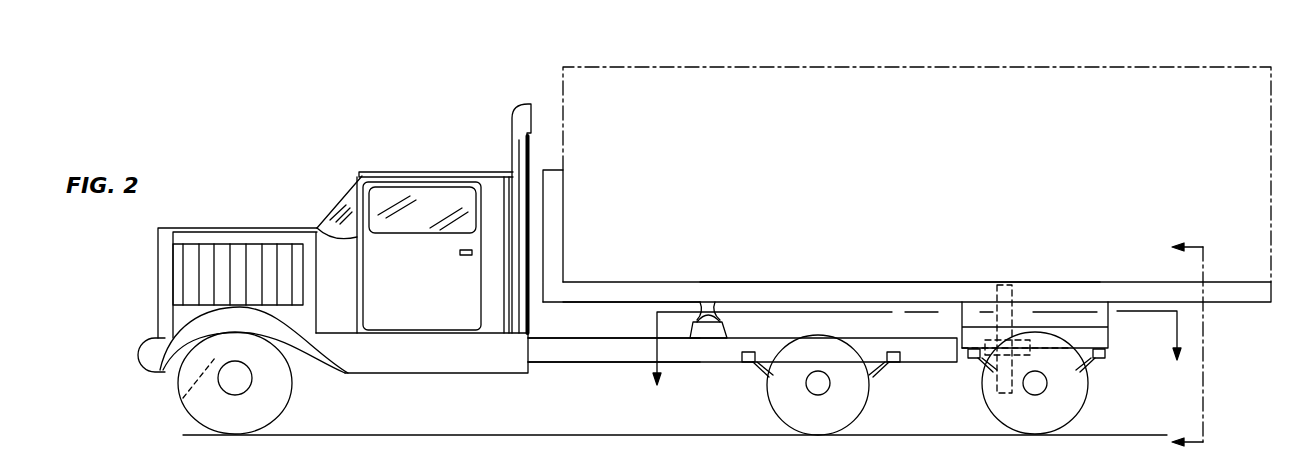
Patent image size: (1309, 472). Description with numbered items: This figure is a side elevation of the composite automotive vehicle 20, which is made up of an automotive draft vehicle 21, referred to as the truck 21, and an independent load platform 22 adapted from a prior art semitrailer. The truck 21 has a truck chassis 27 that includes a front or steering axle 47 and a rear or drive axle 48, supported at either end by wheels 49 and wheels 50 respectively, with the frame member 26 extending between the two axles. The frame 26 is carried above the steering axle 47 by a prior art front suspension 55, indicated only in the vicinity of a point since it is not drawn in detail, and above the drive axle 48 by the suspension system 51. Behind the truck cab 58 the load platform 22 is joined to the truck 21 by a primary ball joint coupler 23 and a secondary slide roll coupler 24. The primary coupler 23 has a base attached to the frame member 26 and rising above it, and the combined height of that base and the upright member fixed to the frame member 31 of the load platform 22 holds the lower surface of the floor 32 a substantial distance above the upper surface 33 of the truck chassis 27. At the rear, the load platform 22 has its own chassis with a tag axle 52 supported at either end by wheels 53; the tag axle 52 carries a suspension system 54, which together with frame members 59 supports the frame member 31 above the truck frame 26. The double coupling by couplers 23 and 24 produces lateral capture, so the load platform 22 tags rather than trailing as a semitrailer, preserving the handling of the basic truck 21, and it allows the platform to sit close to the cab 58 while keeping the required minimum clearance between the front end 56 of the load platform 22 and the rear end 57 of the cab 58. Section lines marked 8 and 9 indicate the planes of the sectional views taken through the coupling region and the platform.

The composite automotive vehicle 20 is at (1279, 94).
The automotive draft vehicle 21 is at (372, 148).
The load platform 22 is at (566, 252).
The primary ball joint coupler 23 is at (714, 318).
The secondary slide roll coupler 24 is at (1005, 330).
The frame member 26 is at (636, 356).
The truck chassis 27 is at (593, 362).
The frame member 31 is at (893, 268).
The floor 32 is at (626, 301).
The upper surface 33 is at (605, 338).
The front or steering axle 47 is at (247, 393).
The rear or drive axle 48 is at (830, 388).
The wheels 49 is at (292, 400).
The wheels 50 is at (805, 404).
The suspension system 51 is at (889, 408).
The tag axle 52 is at (1047, 388).
The wheels 53 is at (1087, 396).
The suspension system 54 is at (1107, 356).
The front suspension 55 is at (184, 386).
The front end 56 is at (566, 206).
The rear end 57 is at (531, 172).
The truck cab 58 is at (433, 287).
The frame members 59 is at (1108, 318).
The section line 8- 8 is at (917, 363).
The section line 9- 9 is at (1176, 353).